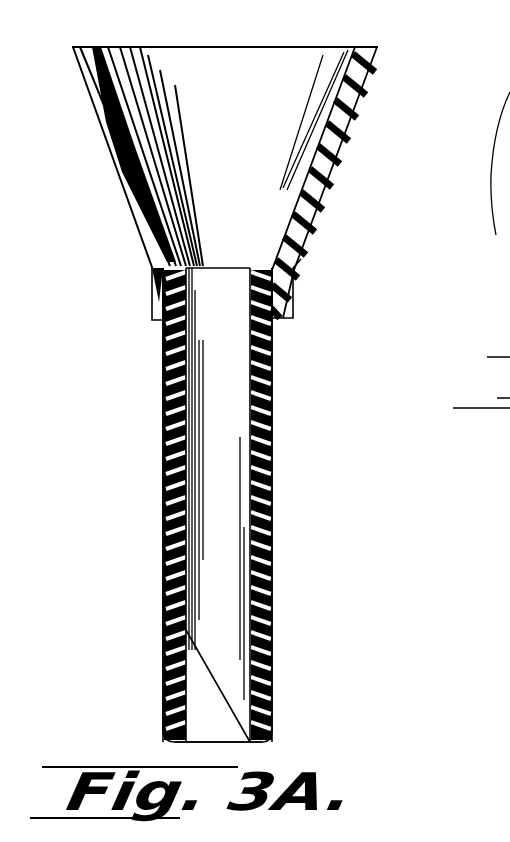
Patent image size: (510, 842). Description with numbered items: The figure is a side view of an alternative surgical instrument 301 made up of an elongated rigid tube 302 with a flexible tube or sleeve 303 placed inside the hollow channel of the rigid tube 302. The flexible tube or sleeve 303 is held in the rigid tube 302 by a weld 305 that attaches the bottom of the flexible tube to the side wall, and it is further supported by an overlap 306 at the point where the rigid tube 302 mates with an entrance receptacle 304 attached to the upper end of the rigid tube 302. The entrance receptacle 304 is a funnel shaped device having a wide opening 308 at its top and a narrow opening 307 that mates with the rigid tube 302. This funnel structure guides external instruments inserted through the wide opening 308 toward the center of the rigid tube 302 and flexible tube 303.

The surgical instrument 301 is at (298, 441).
The rigid tube 302 is at (274, 656).
The flexible tube or sleeve 303 is at (162, 616).
The entrance receptacle 304 is at (338, 137).
The weld 305 is at (258, 744).
The overlap 306 is at (166, 270).
The narrow opening 307 is at (245, 262).
The wide opening 308 is at (325, 47).